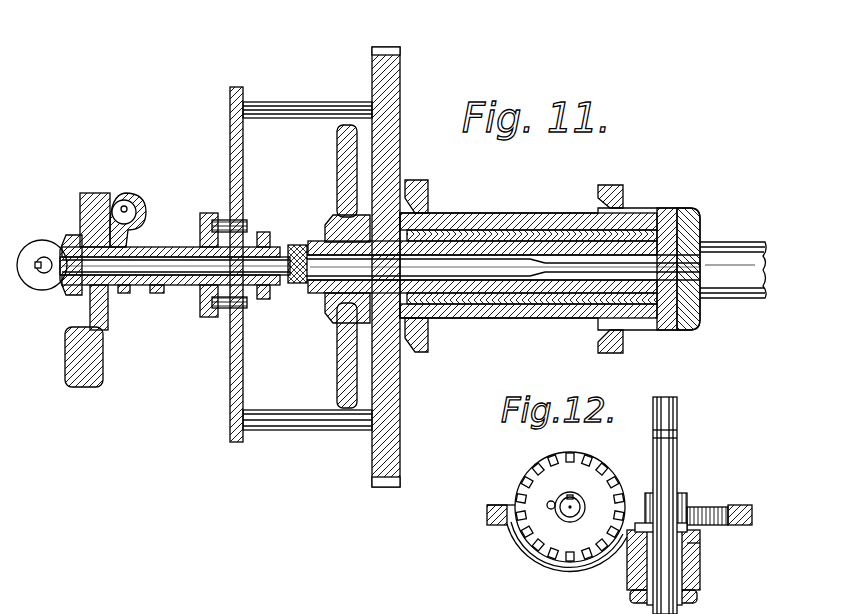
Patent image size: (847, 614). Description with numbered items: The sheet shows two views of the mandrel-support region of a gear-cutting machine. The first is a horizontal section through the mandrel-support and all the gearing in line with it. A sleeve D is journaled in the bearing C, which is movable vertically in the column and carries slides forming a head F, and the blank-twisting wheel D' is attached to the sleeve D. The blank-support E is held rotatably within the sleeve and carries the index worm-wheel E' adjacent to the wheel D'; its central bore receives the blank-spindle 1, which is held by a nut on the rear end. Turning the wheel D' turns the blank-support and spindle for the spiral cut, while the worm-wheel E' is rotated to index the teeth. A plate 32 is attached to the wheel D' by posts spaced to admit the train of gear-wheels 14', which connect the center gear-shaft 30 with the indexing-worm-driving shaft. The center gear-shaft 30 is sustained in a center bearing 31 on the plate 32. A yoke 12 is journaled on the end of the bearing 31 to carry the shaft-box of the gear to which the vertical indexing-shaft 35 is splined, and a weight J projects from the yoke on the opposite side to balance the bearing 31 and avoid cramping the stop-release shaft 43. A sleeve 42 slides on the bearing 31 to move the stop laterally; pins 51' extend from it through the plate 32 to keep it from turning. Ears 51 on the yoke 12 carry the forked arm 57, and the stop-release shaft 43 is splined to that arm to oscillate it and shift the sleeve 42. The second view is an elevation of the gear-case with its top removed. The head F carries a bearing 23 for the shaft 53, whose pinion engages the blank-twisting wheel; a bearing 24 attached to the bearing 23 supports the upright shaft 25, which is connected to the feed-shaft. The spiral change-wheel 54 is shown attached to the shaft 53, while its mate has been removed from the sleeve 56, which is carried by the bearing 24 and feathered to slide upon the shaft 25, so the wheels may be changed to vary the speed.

In FIG. 11, the indexing-shaft 35 is at (45, 257).
In FIG. 11, the center gear-shaft 30 is at (176, 250).
In FIG. 11, the center bearing 31 is at (193, 285).
In FIG. 11, the sleeve 42 is at (153, 293).
In FIG. 11, the yoke 12 is at (92, 200).
In FIG. 11, the weight J is at (84, 374).
In FIG. 11, the ears 51 is at (127, 200).
In FIG. 11, the stop-release shaft 43 is at (132, 201).
In FIG. 11, the forked arm 57 is at (146, 243).
In FIG. 11, the plate 32 is at (230, 416).
In FIG. 11, the pins 51' is at (245, 238).
In FIG. 11, the gear-wheels 14' is at (271, 249).
In FIG. 11, the index worm-wheel E' is at (333, 266).
In FIG. 11, the blank-twisting wheel D' is at (366, 267).
In FIG. 11, the sleeve D is at (550, 253).
In FIG. 11, the bearing C is at (572, 318).
In FIG. 11, the blank-support E is at (482, 233).
In FIG. 11, the head F is at (630, 208).
In FIG. 11, the blank-spindle 1 is at (476, 281).
In FIG. 12, the spiral wheel 54 is at (604, 471).
In FIG. 12, the shaft 53 is at (557, 500).
In FIG. 12, the bearing 23 is at (535, 562).
In FIG. 12, the bearing 24 is at (700, 573).
In FIG. 12, the sleeve 56 is at (688, 498).
In FIG. 12, the upright shaft 25 is at (678, 448).